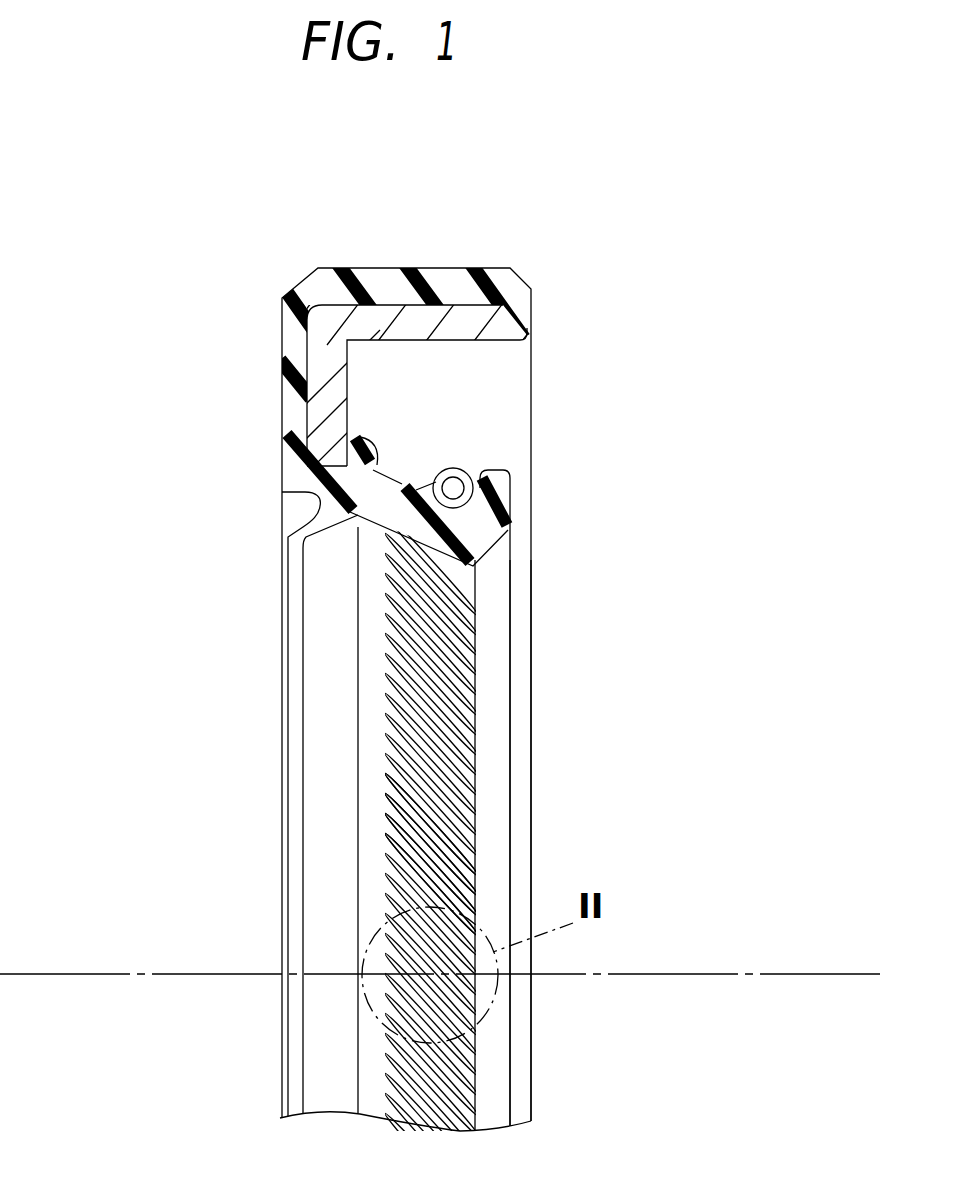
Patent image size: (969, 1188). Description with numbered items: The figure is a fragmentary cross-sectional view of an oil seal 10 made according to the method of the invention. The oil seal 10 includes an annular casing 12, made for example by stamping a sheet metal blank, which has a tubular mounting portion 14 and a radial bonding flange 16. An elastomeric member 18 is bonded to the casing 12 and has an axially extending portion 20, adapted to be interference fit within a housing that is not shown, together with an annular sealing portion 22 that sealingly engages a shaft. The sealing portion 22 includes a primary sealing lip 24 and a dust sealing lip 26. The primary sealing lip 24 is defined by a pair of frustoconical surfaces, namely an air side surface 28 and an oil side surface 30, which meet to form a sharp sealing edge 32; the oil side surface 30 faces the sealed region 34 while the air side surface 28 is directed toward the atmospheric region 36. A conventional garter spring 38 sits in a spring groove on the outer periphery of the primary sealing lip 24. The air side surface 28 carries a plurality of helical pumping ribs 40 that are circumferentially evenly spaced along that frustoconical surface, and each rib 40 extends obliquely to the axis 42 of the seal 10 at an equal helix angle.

The oil seal 10 is at (703, 531).
The annular casing 12 is at (322, 339).
The tubular mounting portion 14 is at (418, 322).
The radial bonding flange 16 is at (320, 428).
The elastomeric member 18 is at (278, 386).
The axially extending portion 20 is at (451, 285).
The annular sealing portion 22 is at (486, 426).
The primary sealing lip 24 is at (466, 530).
The dust sealing lip 26 is at (305, 527).
The air side surface 28 is at (372, 681).
The oil side surface 30 is at (497, 652).
The sealing edge 32 is at (478, 728).
The sealed region 34 is at (733, 679).
The atmospheric region 36 is at (123, 695).
The garter spring 38 is at (468, 473).
The helical pumping ribs 40 is at (465, 848).
The axis 42 is at (98, 972).